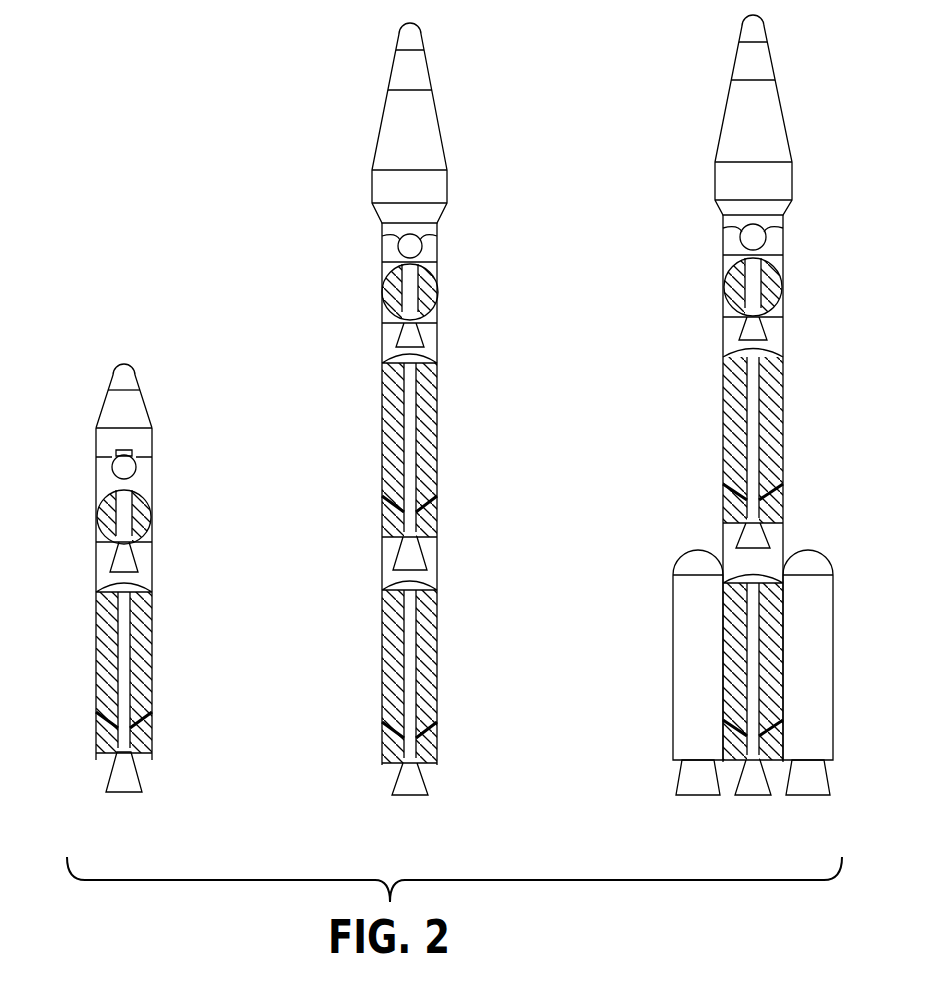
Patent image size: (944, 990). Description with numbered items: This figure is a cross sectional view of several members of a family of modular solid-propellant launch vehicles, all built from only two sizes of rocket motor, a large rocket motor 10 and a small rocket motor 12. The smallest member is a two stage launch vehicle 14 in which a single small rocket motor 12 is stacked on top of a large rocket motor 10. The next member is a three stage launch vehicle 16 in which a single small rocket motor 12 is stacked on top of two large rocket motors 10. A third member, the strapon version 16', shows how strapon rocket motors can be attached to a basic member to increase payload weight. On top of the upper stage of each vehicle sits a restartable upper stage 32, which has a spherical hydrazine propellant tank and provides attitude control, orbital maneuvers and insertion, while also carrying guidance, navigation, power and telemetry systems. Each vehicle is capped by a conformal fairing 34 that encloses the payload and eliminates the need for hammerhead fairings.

The large rocket motor 10 is at (152, 692).
The small rocket motor 12 is at (152, 522).
The two stage launch vehicle 14 is at (180, 398).
The three stage launch vehicle 16 is at (459, 466).
The three stage launch vehicle with strapon rocket motors 16' is at (808, 460).
The restartable upper stage 32 is at (150, 464).
The conformal fairing 34 is at (96, 428).